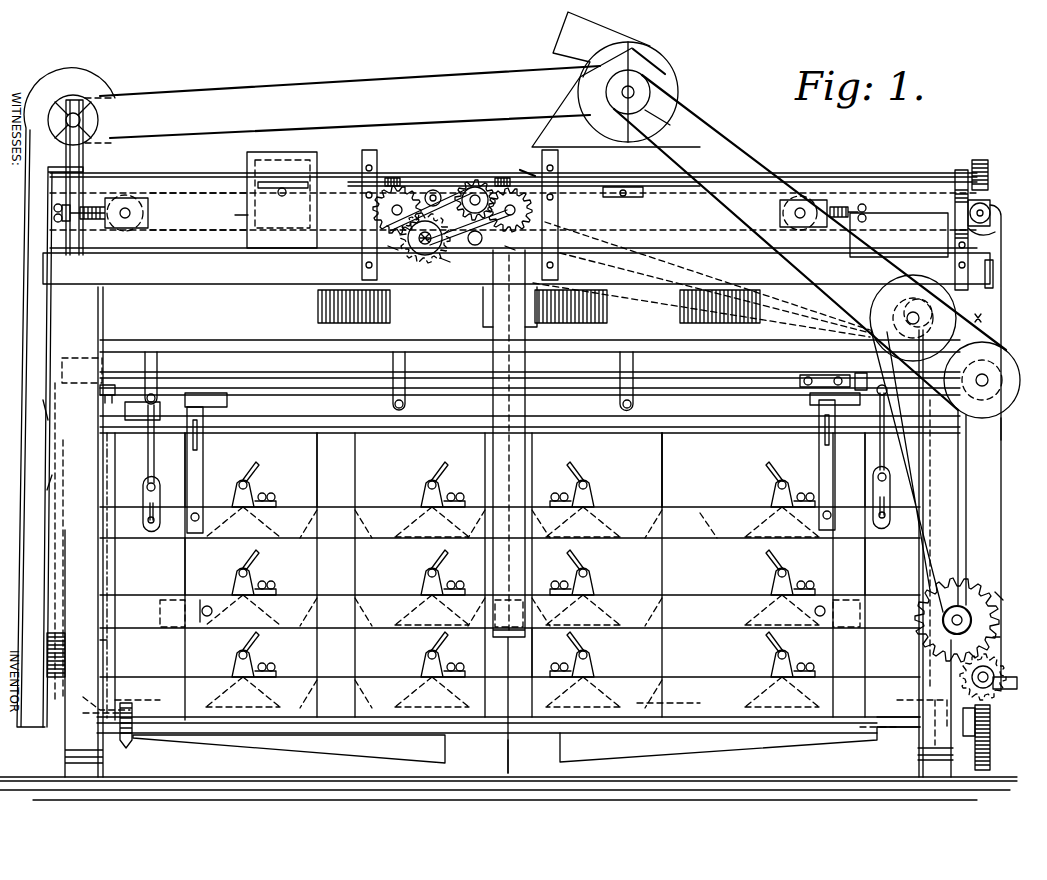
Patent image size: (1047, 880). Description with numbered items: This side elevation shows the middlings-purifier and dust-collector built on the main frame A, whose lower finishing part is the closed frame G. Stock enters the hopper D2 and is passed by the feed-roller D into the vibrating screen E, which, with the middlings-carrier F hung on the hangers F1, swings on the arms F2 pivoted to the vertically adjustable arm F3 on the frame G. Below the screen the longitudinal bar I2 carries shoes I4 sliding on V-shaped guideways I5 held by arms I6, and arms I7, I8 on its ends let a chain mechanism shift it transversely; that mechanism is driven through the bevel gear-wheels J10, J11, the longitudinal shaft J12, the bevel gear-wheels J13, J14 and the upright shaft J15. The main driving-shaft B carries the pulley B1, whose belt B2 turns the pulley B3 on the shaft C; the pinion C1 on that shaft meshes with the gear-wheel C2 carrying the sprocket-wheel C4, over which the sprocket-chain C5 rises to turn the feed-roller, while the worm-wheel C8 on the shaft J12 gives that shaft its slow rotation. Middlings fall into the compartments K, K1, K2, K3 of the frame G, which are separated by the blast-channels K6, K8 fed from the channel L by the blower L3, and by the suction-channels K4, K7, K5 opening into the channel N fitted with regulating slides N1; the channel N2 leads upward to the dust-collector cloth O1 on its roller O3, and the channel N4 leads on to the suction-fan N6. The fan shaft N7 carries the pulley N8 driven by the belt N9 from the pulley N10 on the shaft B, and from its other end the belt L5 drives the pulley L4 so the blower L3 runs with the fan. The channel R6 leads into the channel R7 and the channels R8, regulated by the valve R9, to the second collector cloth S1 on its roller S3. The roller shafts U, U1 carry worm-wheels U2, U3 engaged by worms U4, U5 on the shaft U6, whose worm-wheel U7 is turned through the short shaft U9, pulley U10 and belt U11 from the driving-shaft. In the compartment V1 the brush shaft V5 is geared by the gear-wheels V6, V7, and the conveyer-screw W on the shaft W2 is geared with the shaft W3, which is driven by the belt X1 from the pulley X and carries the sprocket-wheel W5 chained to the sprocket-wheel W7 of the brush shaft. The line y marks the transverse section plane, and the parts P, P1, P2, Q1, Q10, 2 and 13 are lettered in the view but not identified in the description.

The frame A is at (516, 268).
The main driving-shaft B is at (990, 388).
The pulley B1 is at (1021, 421).
The belt B2 is at (968, 492).
The pulley B3 is at (1003, 664).
The shaft C is at (1022, 679).
The pinion C1 is at (992, 700).
The gear-wheel C2 is at (996, 583).
The sprocket-wheel C4 is at (1000, 638).
The sprocket-chain C5 is at (970, 580).
The worm-wheel C8 is at (990, 765).
The feed-roller D is at (914, 324).
The hopper D2 is at (899, 235).
The vibrating screen E is at (530, 359).
The middlings-carrier F is at (891, 492).
The hangers F1 is at (158, 368).
The arms F2 is at (148, 455).
The arm F3 is at (143, 492).
The frame G is at (391, 523).
The longitudinally-extending bar I2 is at (336, 386).
The shoes I4 is at (220, 396).
The guideways I5 is at (226, 410).
The arms I6 is at (203, 468).
The arm I7 is at (112, 383).
The arm I8 is at (842, 375).
The bevel gear-wheel J10 is at (895, 706).
The bevel gear-wheel J11 is at (946, 708).
The shaft J12 is at (900, 735).
The bevel gear-wheel J13 is at (133, 740).
The bevel gear-wheel J14 is at (116, 706).
The upright shaft J15 is at (106, 650).
The compartment K is at (808, 470).
The compartment K1 is at (643, 470).
The compartment K2 is at (400, 507).
The compartment K3 is at (241, 470).
The suction-channel K4 is at (856, 566).
The suction-channel K5 is at (172, 566).
The blast-channel K6 is at (679, 470).
The suction-channel K7 is at (526, 652).
The blast-channel K8 is at (330, 470).
The channel L is at (508, 708).
The blower L3 is at (68, 78).
The pulley L4 is at (82, 100).
The belt L5 is at (300, 90).
The channel N is at (497, 630).
The slides N1 is at (202, 612).
The channel N2 is at (525, 463).
The channel N4 is at (600, 78).
The suction-fan N6 is at (664, 70).
The shaft N7 is at (688, 84).
The pulley N8 is at (650, 112).
The belt N9 is at (760, 152).
The pulley N10 is at (1003, 347).
The endless traveling cloth O1 is at (703, 193).
The roller O3 is at (812, 197).
The pawl carriage P is at (243, 499).
The pawl carriage P1 is at (243, 587).
The pawl carriage P2 is at (243, 669).
The plate Q1 is at (718, 747).
The plate Q10 is at (289, 749).
The channel R6 is at (368, 160).
The channel R7 is at (318, 142).
The channels R8 is at (228, 212).
The valve R9 is at (286, 197).
The endless traveling cloth S1 is at (222, 190).
The roller S3 is at (130, 192).
The shaft U is at (510, 190).
The shaft U1 is at (397, 186).
The worm-wheel U2 is at (510, 248).
The worm-wheel U3 is at (393, 250).
The worm U4 is at (503, 186).
The worm U5 is at (400, 182).
The shaft U6 is at (928, 218).
The worm-wheel U7 is at (982, 160).
The short shaft U9 is at (991, 210).
The pulley U10 is at (986, 233).
The belt U11 is at (993, 285).
The compartment V1 is at (475, 182).
The shaft V5 is at (435, 189).
The gear-wheel V6 is at (480, 240).
The gear-wheel V7 is at (475, 180).
The conveyer-screw W is at (425, 238).
The shaft W2 is at (479, 285).
The shaft W3 is at (500, 176).
The sprocket-wheel W5 is at (447, 262).
The sprocket-wheel W7 is at (522, 170).
The pulley X is at (970, 318).
The belt X1 is at (701, 279).
The section line y is at (515, 756).
The frame 2 is at (28, 413).
The frame 13 is at (53, 483).